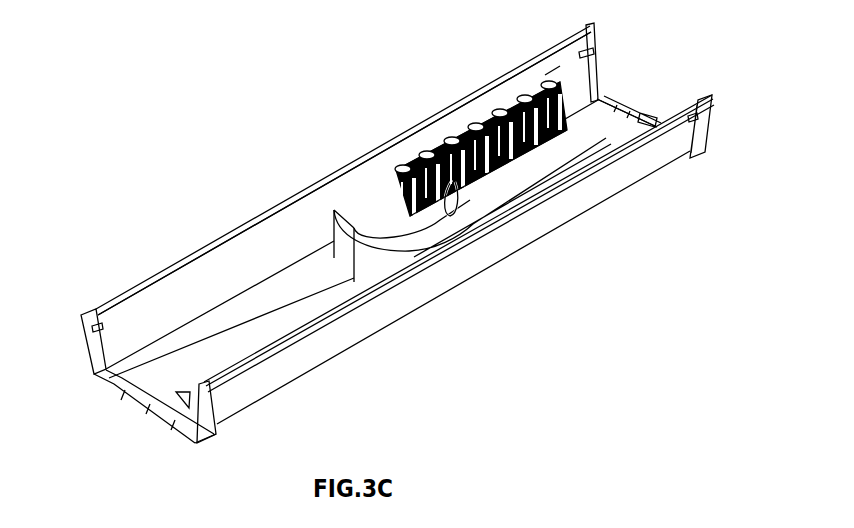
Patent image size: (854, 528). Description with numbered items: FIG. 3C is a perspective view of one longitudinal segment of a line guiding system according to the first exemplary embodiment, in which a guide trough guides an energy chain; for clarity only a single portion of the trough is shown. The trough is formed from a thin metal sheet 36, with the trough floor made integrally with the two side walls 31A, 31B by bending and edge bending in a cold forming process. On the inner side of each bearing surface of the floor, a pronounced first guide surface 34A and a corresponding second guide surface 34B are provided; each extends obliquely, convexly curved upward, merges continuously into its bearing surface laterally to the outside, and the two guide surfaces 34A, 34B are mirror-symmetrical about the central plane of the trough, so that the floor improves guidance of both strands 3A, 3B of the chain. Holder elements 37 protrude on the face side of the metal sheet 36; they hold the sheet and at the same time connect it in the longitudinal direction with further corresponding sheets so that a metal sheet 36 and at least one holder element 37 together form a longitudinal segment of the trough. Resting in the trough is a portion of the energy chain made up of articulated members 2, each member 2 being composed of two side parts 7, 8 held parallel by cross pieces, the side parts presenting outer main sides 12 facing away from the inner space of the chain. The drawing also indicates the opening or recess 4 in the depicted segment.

The member 2 is at (491, 108).
The first strand 3A is at (524, 82).
The second strand 3B is at (564, 160).
The opening 4 is at (333, 225).
The side part 7 is at (394, 230).
The side part 8 is at (402, 186).
The outer main side 12 is at (445, 192).
The side wall 31A is at (182, 280).
The side wall 31B is at (242, 393).
The first guide surface 34A is at (571, 135).
The second guide surface 34B is at (125, 390).
The metal sheet 36 is at (138, 311).
The holder element 37 is at (88, 349).